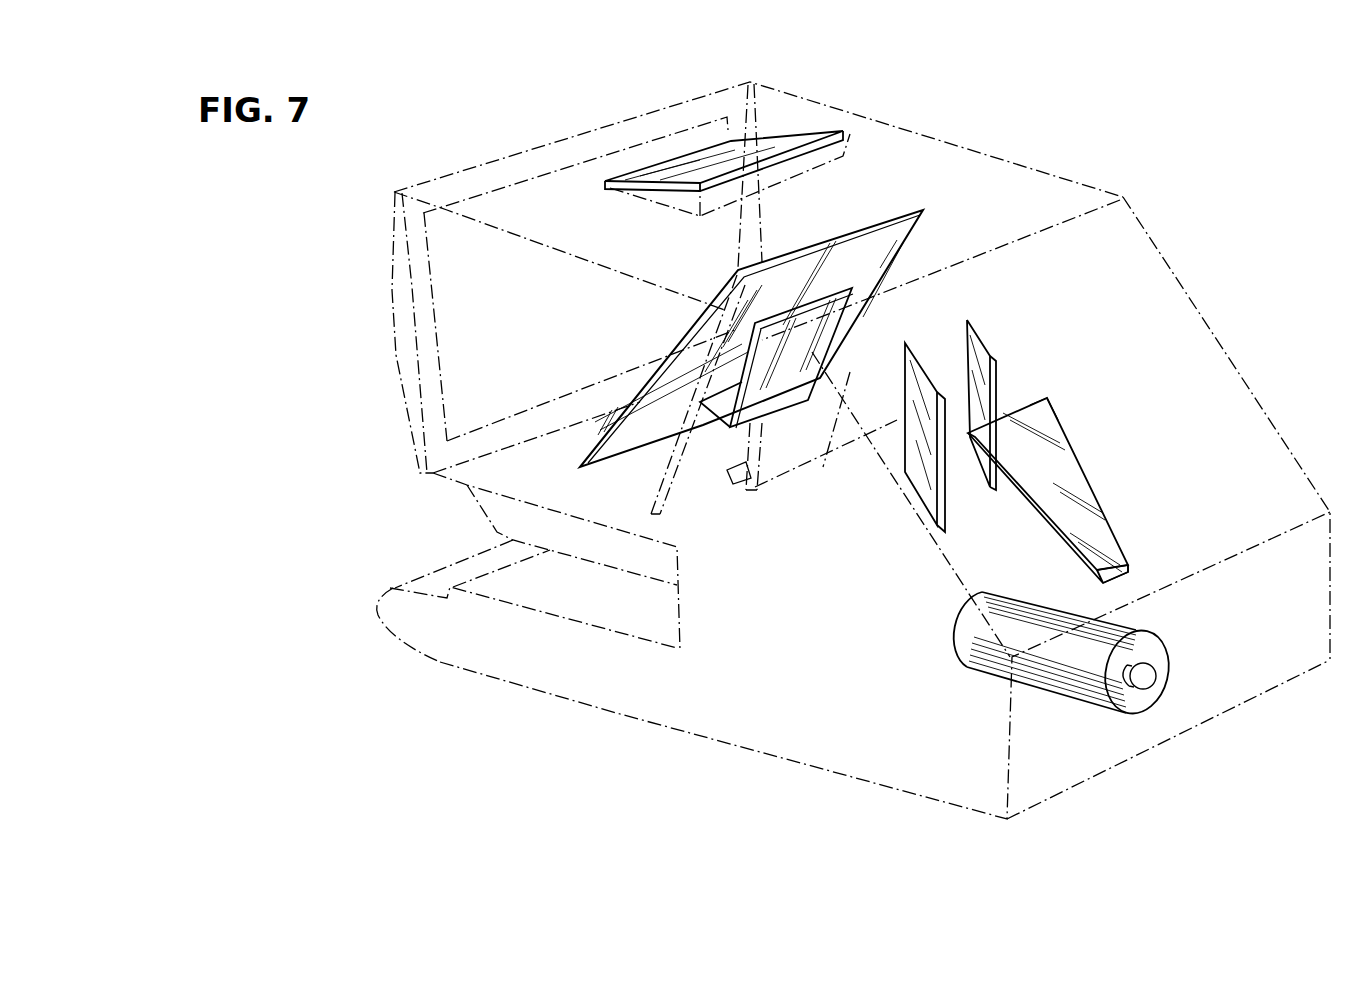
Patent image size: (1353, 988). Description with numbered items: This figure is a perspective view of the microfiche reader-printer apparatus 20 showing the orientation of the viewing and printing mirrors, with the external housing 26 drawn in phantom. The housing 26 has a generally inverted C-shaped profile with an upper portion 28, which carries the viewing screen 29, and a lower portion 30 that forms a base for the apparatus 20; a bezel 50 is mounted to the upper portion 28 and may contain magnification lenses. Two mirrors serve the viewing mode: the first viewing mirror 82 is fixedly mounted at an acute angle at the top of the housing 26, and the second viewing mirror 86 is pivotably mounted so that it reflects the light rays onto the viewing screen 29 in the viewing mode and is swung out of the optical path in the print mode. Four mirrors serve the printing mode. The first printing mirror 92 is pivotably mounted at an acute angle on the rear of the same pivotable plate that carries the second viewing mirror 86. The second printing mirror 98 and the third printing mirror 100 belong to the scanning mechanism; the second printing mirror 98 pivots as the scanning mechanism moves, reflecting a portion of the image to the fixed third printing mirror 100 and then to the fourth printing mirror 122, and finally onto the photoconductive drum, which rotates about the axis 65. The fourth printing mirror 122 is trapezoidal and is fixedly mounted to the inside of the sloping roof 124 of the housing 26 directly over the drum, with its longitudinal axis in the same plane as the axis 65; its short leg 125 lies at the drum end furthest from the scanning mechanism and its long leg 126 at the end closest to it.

The microfiche reader-printer apparatus 20 is at (1096, 128).
The housing 26 is at (612, 710).
The upper portion 28 is at (462, 477).
The viewing screen 29 is at (434, 293).
The lower portion 30 is at (430, 649).
The bezel 50 is at (492, 520).
The axis 65 is at (1090, 706).
The first viewing mirror 82 is at (843, 137).
The second viewing mirror 86 is at (666, 474).
The first printing mirror 92 is at (770, 502).
The second printing mirror 98 is at (965, 335).
The third printing mirror 100 is at (917, 352).
The fourth printing mirror 122 is at (1093, 492).
The sloping roof 124 is at (1207, 330).
The short leg 125 is at (1134, 578).
The long leg 126 is at (1045, 398).